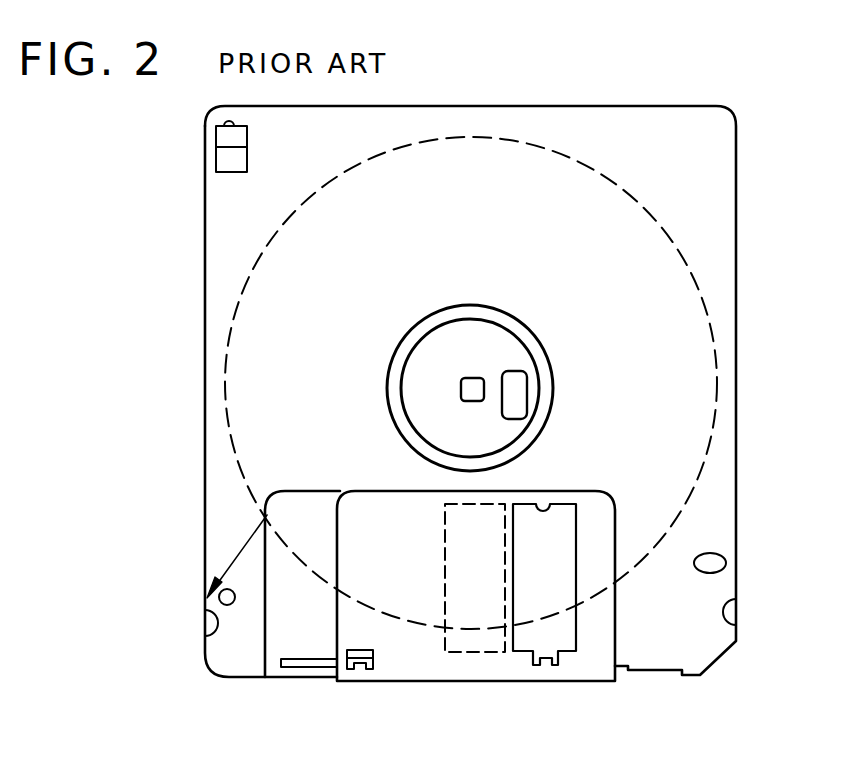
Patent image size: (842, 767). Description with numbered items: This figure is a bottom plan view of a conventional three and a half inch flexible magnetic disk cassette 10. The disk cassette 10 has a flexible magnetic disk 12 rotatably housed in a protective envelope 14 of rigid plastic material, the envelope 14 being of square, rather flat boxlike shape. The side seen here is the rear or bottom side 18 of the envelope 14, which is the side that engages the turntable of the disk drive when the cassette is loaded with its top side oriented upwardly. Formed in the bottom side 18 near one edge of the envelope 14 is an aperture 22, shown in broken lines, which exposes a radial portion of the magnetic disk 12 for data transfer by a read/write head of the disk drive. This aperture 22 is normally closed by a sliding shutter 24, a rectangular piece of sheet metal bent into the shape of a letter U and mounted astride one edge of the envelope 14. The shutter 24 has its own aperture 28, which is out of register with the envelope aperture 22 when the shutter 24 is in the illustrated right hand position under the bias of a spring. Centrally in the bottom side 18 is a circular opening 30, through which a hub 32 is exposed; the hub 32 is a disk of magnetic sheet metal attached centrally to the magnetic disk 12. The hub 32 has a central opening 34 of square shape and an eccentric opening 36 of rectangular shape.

The disk cassette 10 is at (514, 386).
The protective envelope 14 is at (744, 196).
The flexible magnetic disk 12 is at (717, 373).
The bottom side 18 is at (727, 450).
The circular opening 30 is at (479, 365).
The hub 32 is at (452, 330).
The central opening 34 is at (463, 390).
The eccentric opening 36 is at (518, 394).
The aperture 22 is at (450, 505).
The shutter aperture 28 is at (548, 505).
The sliding shutter 24 is at (476, 586).